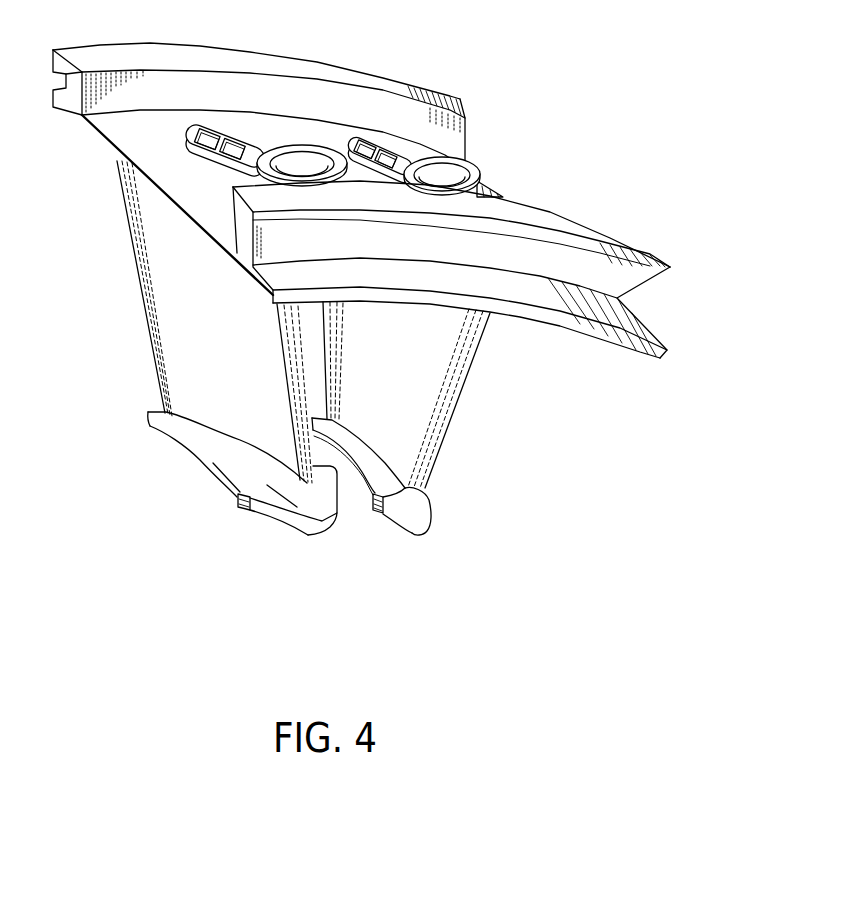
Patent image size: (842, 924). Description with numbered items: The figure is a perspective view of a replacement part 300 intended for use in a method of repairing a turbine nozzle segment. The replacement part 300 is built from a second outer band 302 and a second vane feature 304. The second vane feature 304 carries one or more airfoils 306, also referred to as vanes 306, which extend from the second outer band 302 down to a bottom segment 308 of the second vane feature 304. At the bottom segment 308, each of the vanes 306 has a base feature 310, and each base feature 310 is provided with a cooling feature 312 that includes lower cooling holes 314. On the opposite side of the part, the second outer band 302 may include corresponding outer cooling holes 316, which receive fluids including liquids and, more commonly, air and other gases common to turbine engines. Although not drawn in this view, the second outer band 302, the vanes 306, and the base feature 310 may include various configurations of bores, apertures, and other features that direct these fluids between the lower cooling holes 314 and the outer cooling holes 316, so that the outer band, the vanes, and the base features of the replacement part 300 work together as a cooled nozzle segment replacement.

The replacement part 300 is at (380, 331).
The second outer band 302 is at (656, 309).
The second vane feature 304 is at (283, 497).
The airfoil 306 is at (245, 373).
The bottom segment 308 is at (127, 410).
The base feature 310 is at (145, 408).
The cooling feature 312 is at (352, 538).
The lower cooling holes 314 is at (238, 508).
The outer cooling holes 316 is at (351, 130).